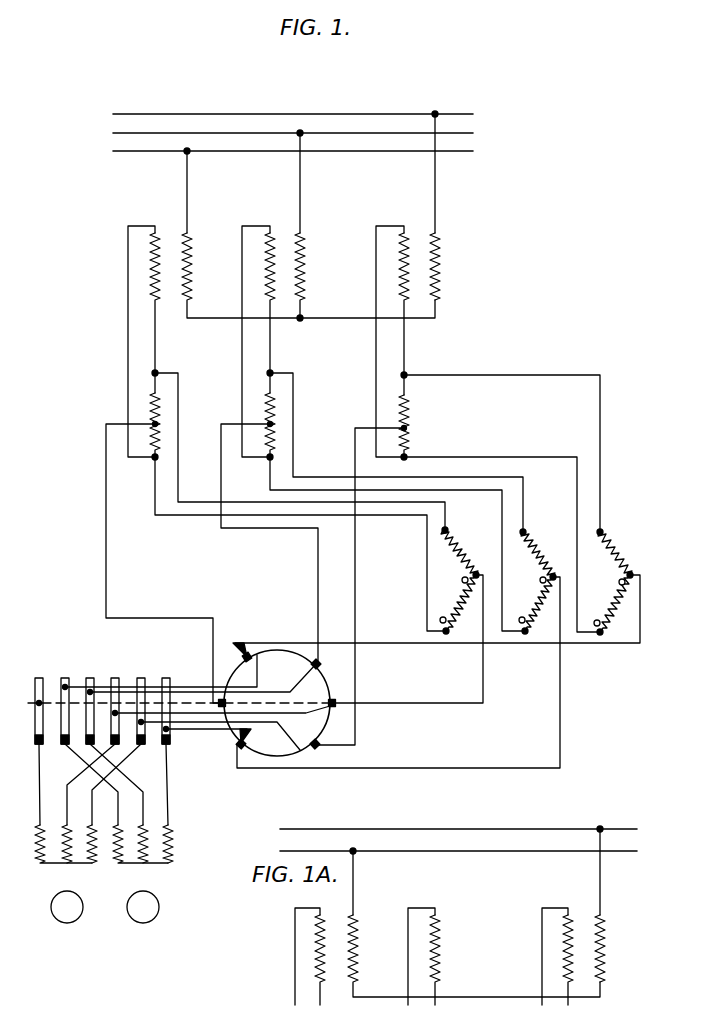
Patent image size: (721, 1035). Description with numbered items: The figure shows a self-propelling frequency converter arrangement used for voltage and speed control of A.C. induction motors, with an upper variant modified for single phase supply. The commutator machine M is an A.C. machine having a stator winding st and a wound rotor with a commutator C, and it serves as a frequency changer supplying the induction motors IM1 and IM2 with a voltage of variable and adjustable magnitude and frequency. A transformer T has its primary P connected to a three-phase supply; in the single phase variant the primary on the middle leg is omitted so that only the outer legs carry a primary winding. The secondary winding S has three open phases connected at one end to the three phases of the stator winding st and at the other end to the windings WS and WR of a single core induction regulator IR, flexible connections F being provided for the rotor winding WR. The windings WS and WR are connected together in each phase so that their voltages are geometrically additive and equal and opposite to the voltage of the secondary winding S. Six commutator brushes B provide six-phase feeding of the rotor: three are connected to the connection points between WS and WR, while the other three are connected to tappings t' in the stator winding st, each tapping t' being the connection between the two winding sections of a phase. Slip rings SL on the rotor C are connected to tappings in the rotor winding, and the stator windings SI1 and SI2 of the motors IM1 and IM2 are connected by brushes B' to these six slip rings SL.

In FIG. 1, the transformer T is at (293, 172).
In FIG. 1A, the transformer T is at (458, 870).
In FIG. 1, the primary winding P is at (319, 277).
In FIG. 1A, the primary winding P is at (487, 956).
In FIG. 1, the secondary winding S is at (268, 341).
In FIG. 1A, the secondary winding S is at (434, 956).
In FIG. 1, the stator winding st is at (280, 415).
In FIG. 1, the tapping t' is at (256, 584).
In FIG. 1, the stator winding of induction regulator WS is at (395, 476).
In FIG. 1, the rotor winding of induction regulator WR is at (393, 546).
In FIG. 1, the flexible connections F is at (527, 598).
In FIG. 1, the induction regulator IR is at (436, 671).
In FIG. 1, the commutator machine M is at (185, 661).
In FIG. 1, the commutator C is at (180, 703).
In FIG. 1, the commutator brushes B is at (281, 707).
In FIG. 1, the brushes B' is at (92, 721).
In FIG. 1, the slip rings SL is at (92, 709).
In FIG. 1, the stator winding of first induction motor SI1 is at (75, 805).
In FIG. 1, the stator winding of second induction motor SI2 is at (135, 808).
In FIG. 1, the induction motor IM1 is at (65, 899).
In FIG. 1, the induction motor IM2 is at (142, 899).